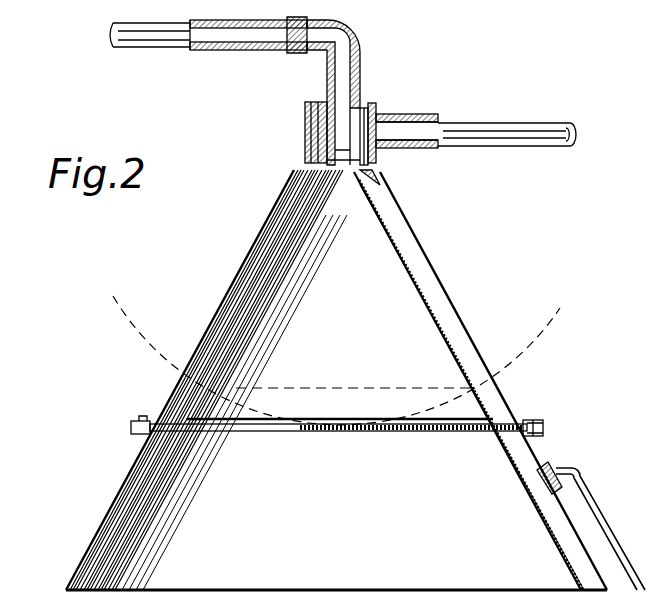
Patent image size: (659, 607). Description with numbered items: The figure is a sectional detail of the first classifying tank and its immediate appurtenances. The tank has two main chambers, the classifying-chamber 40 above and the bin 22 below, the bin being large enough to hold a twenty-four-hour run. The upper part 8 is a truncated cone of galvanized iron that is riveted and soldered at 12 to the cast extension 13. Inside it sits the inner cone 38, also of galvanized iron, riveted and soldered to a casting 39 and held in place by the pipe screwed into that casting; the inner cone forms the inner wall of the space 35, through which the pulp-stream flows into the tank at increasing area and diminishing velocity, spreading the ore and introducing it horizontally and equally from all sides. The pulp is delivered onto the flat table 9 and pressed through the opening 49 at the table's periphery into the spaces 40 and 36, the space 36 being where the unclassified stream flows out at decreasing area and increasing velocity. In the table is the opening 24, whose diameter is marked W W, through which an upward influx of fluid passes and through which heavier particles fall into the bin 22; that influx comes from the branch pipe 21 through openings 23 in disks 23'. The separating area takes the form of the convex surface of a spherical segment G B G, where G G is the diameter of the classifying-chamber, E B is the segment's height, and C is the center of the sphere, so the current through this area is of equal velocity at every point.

The cast extension 13 is at (392, 102).
The casting 39 is at (305, 158).
The center of the sphere C is at (467, 388).
The inner cone 38 is at (248, 276).
The upper part 8 is at (278, 222).
The riveted and soldered joint 12 is at (396, 188).
The inflow space 35 is at (413, 252).
The outflow space 36 is at (339, 272).
The classifying-chamber 40 is at (350, 347).
The diameter line of the classifying-chamber G is at (336, 360).
The height point of separating area E is at (353, 380).
The apex of separating area B is at (340, 410).
The opening in the table 24 is at (342, 434).
The diameter of opening 24 W is at (369, 434).
The table 9 is at (238, 435).
The opening at table periphery 49 is at (493, 422).
The openings in disks 23 is at (531, 490).
The disks 23' is at (587, 441).
The branch pipe 21 is at (600, 529).
The bin 22 is at (336, 577).